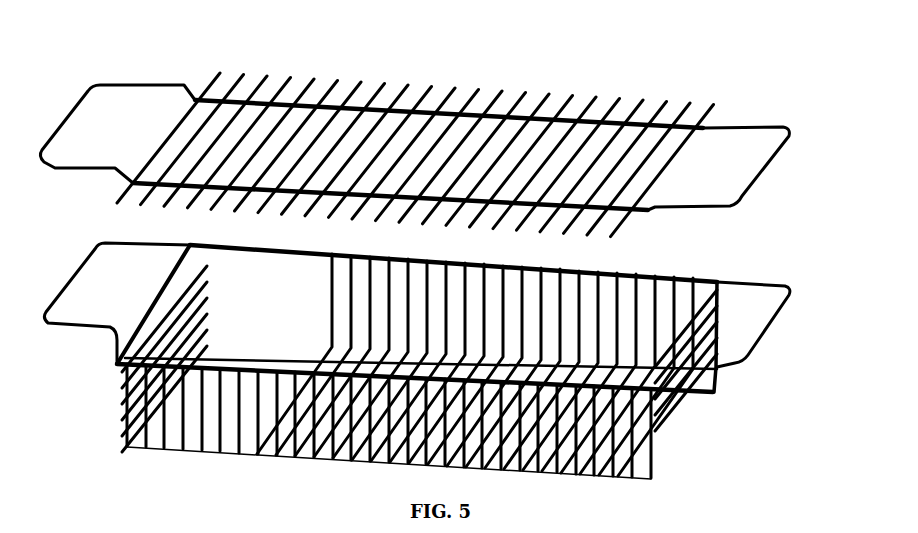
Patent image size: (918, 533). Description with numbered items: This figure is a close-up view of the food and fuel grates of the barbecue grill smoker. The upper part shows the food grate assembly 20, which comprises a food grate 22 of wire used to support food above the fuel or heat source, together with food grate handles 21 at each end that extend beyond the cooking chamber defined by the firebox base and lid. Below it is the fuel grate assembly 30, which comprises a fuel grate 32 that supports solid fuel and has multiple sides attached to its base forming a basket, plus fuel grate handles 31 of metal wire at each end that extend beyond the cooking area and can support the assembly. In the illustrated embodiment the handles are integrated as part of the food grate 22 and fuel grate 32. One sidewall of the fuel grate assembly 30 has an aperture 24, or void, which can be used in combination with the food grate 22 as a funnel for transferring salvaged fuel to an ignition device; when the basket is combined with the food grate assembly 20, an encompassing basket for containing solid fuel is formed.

The food grate assembly 20 is at (136, 59).
The food grate handles 21 is at (752, 124).
The food grate 22 is at (620, 96).
The aperture 24 is at (262, 273).
The fuel grate assembly 30 is at (84, 244).
The fuel grate handles 31 is at (788, 287).
The fuel grate 32 is at (682, 416).